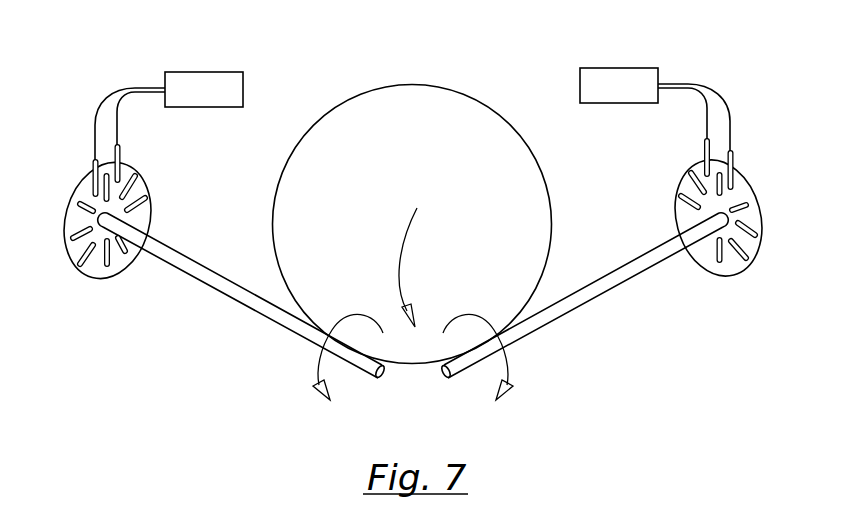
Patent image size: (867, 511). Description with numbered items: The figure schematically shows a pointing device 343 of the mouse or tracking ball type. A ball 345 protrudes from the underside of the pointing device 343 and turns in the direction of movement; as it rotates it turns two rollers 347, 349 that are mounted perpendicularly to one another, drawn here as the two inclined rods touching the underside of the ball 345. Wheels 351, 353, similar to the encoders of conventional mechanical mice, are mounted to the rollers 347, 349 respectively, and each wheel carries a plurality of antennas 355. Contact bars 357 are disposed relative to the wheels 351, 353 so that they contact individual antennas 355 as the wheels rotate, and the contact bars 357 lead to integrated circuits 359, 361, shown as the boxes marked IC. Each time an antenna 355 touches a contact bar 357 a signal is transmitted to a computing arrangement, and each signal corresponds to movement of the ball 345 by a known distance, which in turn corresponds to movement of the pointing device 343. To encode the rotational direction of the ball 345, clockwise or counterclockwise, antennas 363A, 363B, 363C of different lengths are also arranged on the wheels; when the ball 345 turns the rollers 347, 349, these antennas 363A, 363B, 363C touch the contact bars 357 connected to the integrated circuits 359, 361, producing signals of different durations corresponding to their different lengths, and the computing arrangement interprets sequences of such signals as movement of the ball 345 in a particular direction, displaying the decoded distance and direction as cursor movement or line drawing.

The pointing device 343 is at (577, 354).
The ball 345 is at (434, 75).
The roller 347 is at (262, 310).
The roller 349 is at (577, 300).
The wheel 351 is at (75, 260).
The wheel 353 is at (687, 212).
The antennas 355 is at (72, 240).
The contact bars 357 is at (93, 172).
The integrated circuit 359 is at (202, 73).
The integrated circuit 361 is at (617, 72).
The antenna 363A is at (138, 183).
The antenna 363B is at (150, 219).
The antenna 363C is at (129, 254).